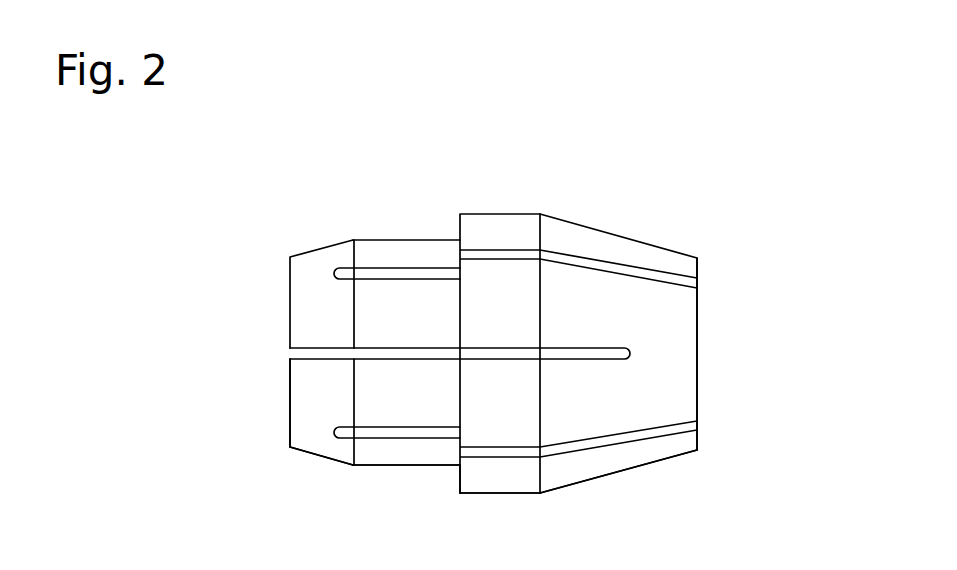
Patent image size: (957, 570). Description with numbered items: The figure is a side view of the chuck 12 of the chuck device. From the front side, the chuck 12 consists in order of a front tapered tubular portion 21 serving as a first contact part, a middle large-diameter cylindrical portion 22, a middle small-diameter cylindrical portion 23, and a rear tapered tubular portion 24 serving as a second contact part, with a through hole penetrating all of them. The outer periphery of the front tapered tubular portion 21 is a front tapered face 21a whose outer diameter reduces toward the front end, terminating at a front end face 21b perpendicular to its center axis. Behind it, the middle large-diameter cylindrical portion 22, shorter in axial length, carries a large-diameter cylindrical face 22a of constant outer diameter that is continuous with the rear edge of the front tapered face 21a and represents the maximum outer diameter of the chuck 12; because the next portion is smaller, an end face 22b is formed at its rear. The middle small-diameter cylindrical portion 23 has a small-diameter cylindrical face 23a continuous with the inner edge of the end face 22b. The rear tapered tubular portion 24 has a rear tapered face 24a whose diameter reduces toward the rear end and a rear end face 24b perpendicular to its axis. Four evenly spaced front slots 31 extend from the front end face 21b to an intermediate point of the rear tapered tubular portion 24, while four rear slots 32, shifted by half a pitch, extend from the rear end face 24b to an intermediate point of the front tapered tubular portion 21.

The chuck 12 is at (690, 231).
The front tapered tubular portion 21 is at (616, 243).
The front tapered face 21a is at (632, 470).
The front end face 21b is at (698, 440).
The middle large-diameter cylindrical portion 22 is at (502, 226).
The large-diameter cylindrical face 22a is at (498, 493).
The end face 22b is at (460, 473).
The middle small-diameter cylindrical portion 23 is at (412, 250).
The small-diameter cylindrical face 23a is at (390, 465).
The rear tapered tubular portion 24 is at (322, 253).
The rear tapered face 24a is at (312, 455).
The rear end face 24b is at (290, 415).
The front slot 31 is at (392, 270).
The rear slot 32 is at (372, 353).